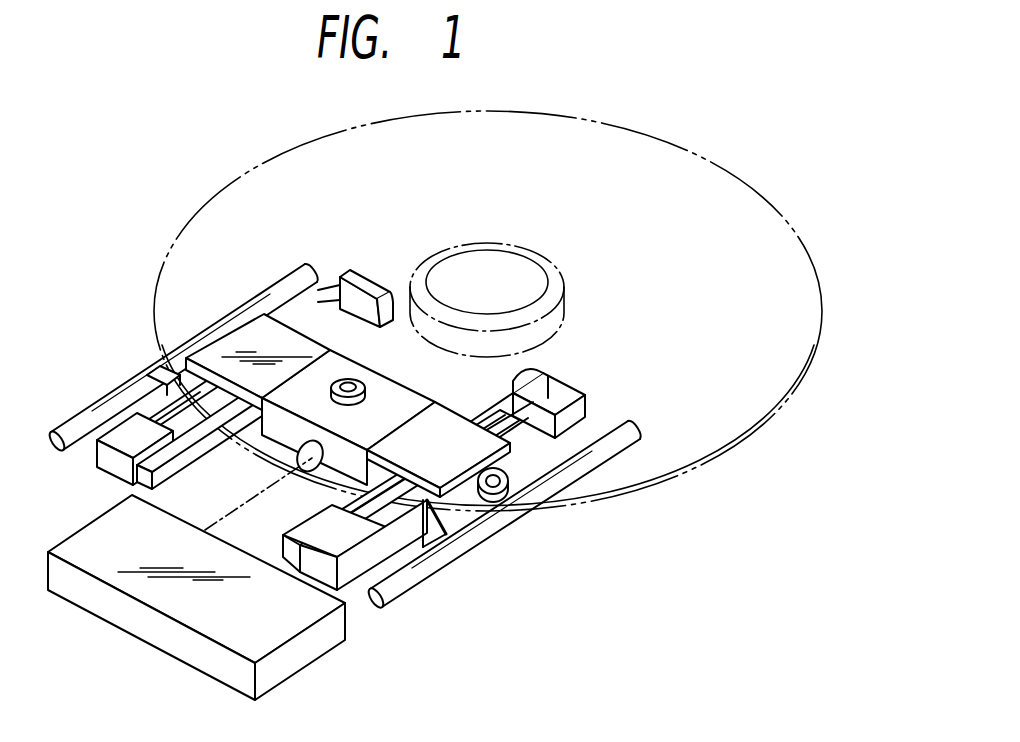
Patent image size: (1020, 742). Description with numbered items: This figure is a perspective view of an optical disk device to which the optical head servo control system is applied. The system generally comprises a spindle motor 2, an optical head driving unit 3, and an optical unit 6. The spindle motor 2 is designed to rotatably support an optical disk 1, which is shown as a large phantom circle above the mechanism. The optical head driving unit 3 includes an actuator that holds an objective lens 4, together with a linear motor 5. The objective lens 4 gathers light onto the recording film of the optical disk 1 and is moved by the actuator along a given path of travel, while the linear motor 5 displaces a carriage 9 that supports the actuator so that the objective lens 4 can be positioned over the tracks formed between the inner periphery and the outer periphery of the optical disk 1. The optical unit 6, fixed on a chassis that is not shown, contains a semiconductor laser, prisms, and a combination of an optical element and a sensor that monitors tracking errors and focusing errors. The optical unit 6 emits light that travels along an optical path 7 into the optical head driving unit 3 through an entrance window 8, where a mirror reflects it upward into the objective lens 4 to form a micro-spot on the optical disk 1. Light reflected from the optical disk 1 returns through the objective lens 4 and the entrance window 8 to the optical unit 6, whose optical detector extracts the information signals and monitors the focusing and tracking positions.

The optical disk 1 is at (757, 382).
The spindle motor 2 is at (507, 258).
The optical head driving unit 3 is at (255, 357).
The objective lens 4 is at (356, 383).
The linear motor 5 is at (232, 400).
The optical unit 6 is at (282, 628).
The optical path 7 is at (245, 498).
The entrance window 8 is at (311, 462).
The carriage 9 is at (397, 402).